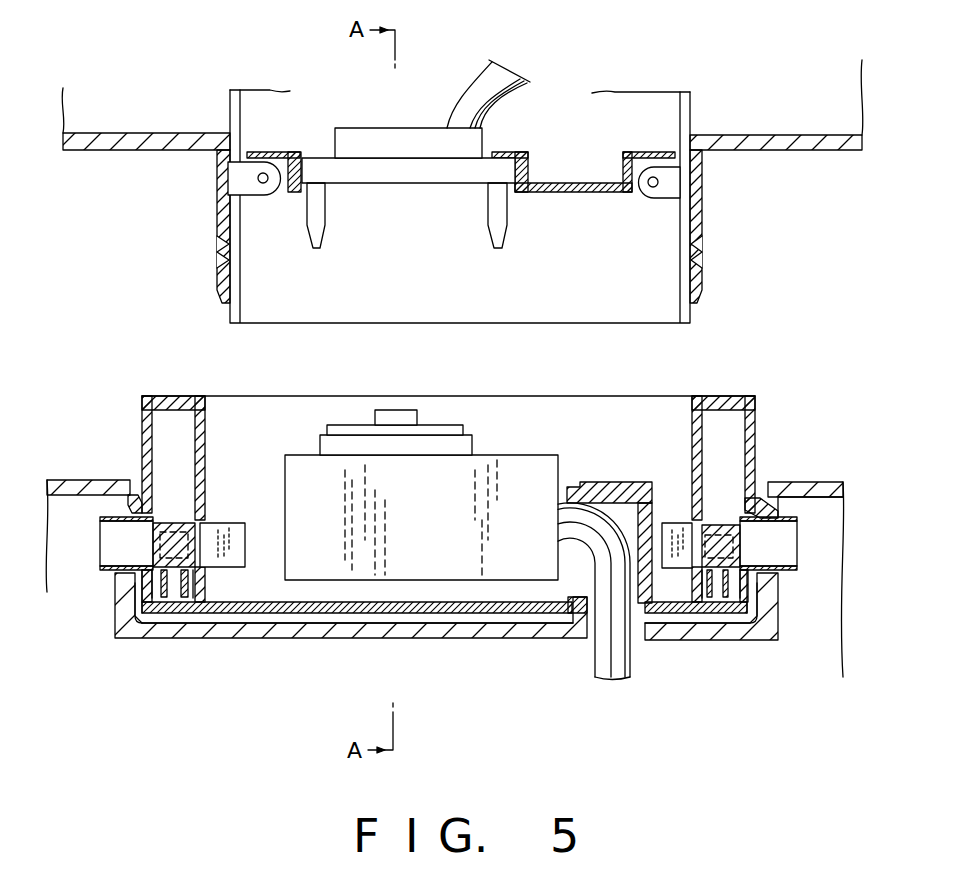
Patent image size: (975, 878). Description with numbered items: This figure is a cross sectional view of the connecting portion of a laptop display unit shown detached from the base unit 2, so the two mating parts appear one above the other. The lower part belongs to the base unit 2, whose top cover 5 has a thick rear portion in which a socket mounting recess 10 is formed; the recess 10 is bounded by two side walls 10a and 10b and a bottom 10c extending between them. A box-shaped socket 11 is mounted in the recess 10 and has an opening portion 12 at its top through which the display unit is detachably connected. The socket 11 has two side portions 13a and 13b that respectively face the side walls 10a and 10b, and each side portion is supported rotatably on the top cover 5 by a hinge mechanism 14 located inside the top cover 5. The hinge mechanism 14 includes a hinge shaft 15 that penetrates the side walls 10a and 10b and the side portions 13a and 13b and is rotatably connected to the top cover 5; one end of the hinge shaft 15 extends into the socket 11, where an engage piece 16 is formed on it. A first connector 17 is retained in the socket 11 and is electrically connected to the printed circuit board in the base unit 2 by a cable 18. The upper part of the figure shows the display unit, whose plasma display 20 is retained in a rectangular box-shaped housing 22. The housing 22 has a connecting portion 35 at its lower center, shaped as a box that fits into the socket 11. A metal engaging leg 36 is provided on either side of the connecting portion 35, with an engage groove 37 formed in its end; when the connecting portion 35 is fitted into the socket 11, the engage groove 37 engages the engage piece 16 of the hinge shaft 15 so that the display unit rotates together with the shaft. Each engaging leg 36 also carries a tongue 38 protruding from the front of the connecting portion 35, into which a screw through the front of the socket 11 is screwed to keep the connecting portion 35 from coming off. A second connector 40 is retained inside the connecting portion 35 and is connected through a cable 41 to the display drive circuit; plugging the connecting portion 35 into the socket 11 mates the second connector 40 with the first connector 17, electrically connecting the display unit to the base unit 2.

The base unit 2 is at (838, 476).
The top cover 5 is at (800, 490).
The socket mounting recess 10 is at (331, 625).
The side wall 10a is at (138, 617).
The side wall 10b is at (757, 613).
The bottom 10c is at (467, 630).
The socket 11 is at (142, 430).
The opening portion 12 is at (556, 410).
The side portion 13a is at (205, 422).
The side portion 13b is at (692, 428).
The hinge mechanism 14 is at (107, 577).
The hinge shaft 15 is at (112, 538).
The engage piece 16 is at (240, 548).
The first connector 17 is at (393, 570).
The cable 18 is at (605, 647).
The plasma display 20 is at (91, 152).
The housing 22 is at (862, 146).
The connecting portion 35 is at (218, 228).
The engaging leg 36 is at (225, 258).
The engage groove 37 is at (237, 298).
The tongue 38 is at (236, 178).
The second connector 40 is at (418, 138).
The cable 41 is at (504, 90).